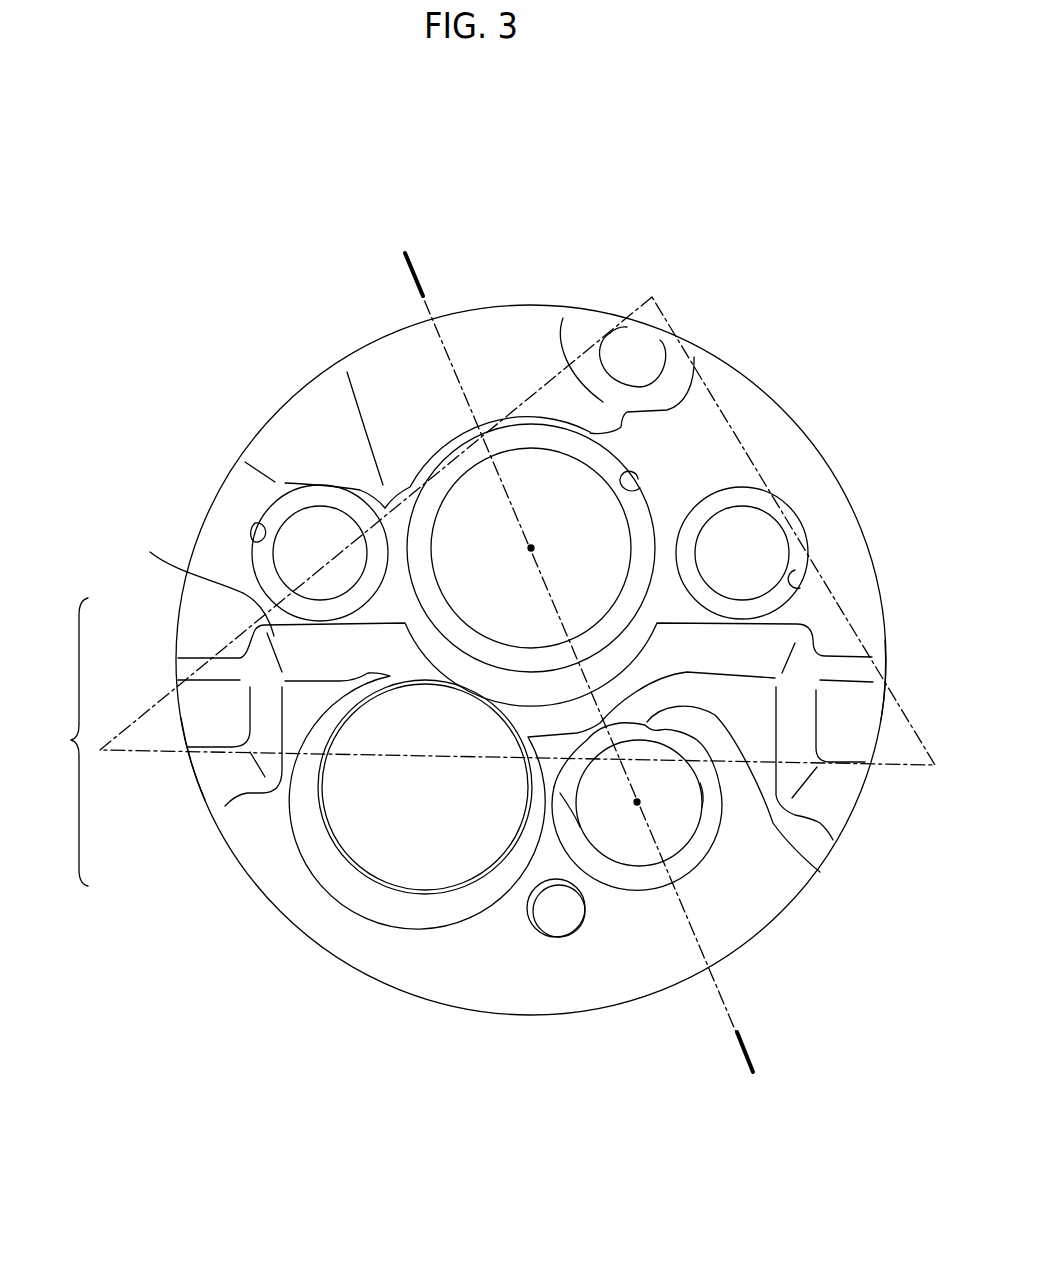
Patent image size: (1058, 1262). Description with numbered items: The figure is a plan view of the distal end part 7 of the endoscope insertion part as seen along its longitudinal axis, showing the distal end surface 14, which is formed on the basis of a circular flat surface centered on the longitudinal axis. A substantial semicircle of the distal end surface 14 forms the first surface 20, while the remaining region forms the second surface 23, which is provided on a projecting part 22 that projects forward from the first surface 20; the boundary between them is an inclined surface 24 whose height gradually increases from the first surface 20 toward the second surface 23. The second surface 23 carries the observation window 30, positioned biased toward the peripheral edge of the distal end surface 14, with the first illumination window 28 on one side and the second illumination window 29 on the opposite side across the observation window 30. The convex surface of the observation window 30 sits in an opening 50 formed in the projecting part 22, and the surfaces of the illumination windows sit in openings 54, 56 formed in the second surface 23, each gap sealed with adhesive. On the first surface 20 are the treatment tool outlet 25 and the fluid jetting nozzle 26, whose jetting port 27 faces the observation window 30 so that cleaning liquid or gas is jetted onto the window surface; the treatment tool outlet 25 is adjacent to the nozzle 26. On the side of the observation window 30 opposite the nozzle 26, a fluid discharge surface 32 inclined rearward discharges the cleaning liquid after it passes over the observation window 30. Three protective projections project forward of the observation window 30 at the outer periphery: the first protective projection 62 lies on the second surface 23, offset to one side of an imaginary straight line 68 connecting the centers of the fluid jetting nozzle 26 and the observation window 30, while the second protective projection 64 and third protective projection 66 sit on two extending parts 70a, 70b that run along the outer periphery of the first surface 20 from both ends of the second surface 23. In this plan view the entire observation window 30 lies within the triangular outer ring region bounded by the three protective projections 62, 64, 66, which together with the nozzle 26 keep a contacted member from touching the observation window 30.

The distal end part 7 is at (467, 207).
The distal end surface 14 is at (65, 742).
The first surface 20 is at (225, 832).
The projecting part 22 is at (226, 450).
The second surface 23 is at (203, 585).
The inclined surface 24 is at (211, 580).
The treatment tool outlet 25 is at (405, 817).
The fluid jetting nozzle 26 is at (673, 817).
The jetting port 27 is at (820, 872).
The first illumination window 28 is at (317, 537).
The second illumination window 29 is at (742, 553).
The observation window 30 is at (575, 530).
The fluid discharge surface 32 is at (458, 347).
The opening 50 is at (640, 488).
The opening 54 is at (255, 523).
The opening 56 is at (808, 582).
The first protective projection 62 is at (640, 357).
The second protective projection 64 is at (214, 716).
The third protective projection 66 is at (847, 719).
The imaginary straight line 68 is at (548, 584).
The extending part 70a is at (182, 762).
The extending part 70b is at (893, 684).